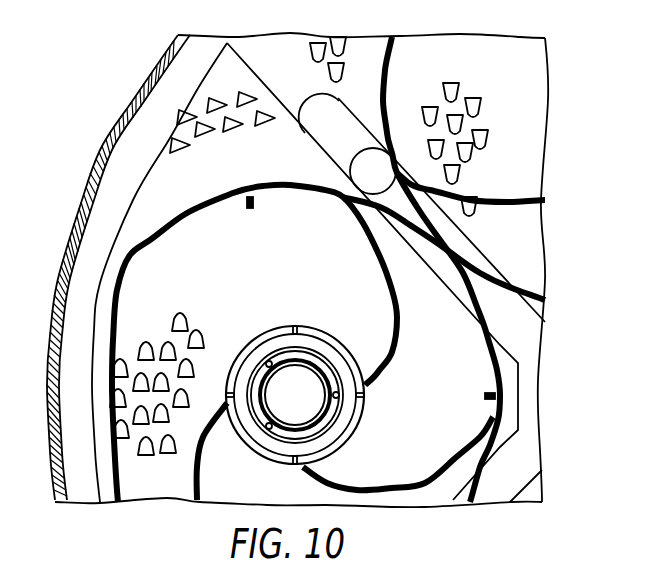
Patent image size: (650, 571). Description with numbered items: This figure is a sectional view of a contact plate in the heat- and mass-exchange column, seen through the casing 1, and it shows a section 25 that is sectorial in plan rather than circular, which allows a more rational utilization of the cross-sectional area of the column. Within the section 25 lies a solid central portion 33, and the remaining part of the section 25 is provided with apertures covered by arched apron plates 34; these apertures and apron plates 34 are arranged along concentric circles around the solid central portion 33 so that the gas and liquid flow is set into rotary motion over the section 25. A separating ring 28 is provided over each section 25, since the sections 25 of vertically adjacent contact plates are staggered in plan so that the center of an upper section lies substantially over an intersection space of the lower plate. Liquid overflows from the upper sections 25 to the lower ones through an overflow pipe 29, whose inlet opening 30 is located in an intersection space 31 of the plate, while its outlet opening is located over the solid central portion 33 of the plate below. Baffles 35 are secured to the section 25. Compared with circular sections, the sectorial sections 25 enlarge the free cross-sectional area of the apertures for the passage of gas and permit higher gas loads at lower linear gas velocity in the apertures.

The casing 1 is at (83, 200).
The section 25 is at (171, 167).
The separating ring 28 is at (83, 463).
The overflow pipe 29 is at (320, 372).
The inlet opening 30 is at (338, 98).
The intersection space 31 is at (245, 46).
The solid central portion 33 is at (345, 418).
The arched apron plate 34 is at (110, 398).
The baffle 35 is at (195, 297).